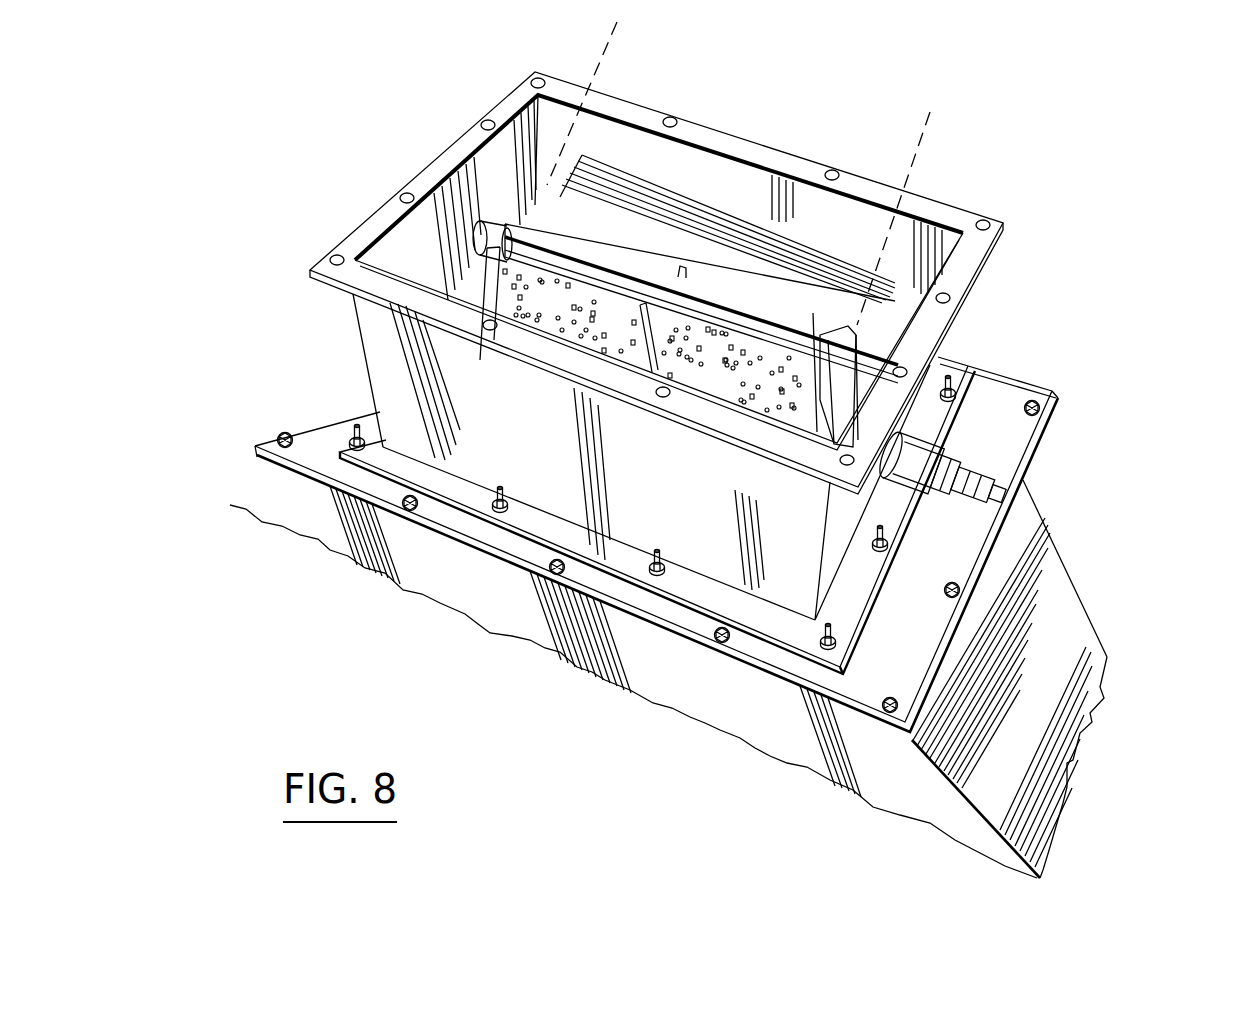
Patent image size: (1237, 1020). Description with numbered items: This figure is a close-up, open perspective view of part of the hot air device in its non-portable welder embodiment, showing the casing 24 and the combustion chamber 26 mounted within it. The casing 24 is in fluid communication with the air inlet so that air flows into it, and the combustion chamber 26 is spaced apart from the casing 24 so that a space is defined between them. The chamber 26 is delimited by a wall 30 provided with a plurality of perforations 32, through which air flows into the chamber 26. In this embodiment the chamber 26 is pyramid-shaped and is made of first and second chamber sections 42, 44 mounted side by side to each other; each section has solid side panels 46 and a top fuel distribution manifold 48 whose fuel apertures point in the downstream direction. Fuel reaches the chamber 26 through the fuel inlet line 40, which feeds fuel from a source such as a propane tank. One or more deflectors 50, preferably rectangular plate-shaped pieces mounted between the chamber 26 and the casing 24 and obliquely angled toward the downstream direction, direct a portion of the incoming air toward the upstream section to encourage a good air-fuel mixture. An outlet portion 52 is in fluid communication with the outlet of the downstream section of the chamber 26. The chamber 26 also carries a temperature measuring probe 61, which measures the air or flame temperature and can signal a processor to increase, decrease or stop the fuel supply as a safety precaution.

The casing 24 is at (377, 309).
The combustion chamber 26 is at (931, 115).
The wall 30 is at (713, 370).
The perforations 32 is at (612, 343).
The fuel inlet line 40 is at (486, 219).
The first chamber section 42 is at (628, 282).
The second chamber section 44 is at (753, 330).
The solid side panels 46 is at (848, 380).
The top fuel distribution manifold 48 is at (593, 253).
The deflectors 50 is at (706, 218).
The outlet portion 52 is at (1065, 590).
The temperature measuring probe 61 is at (946, 436).